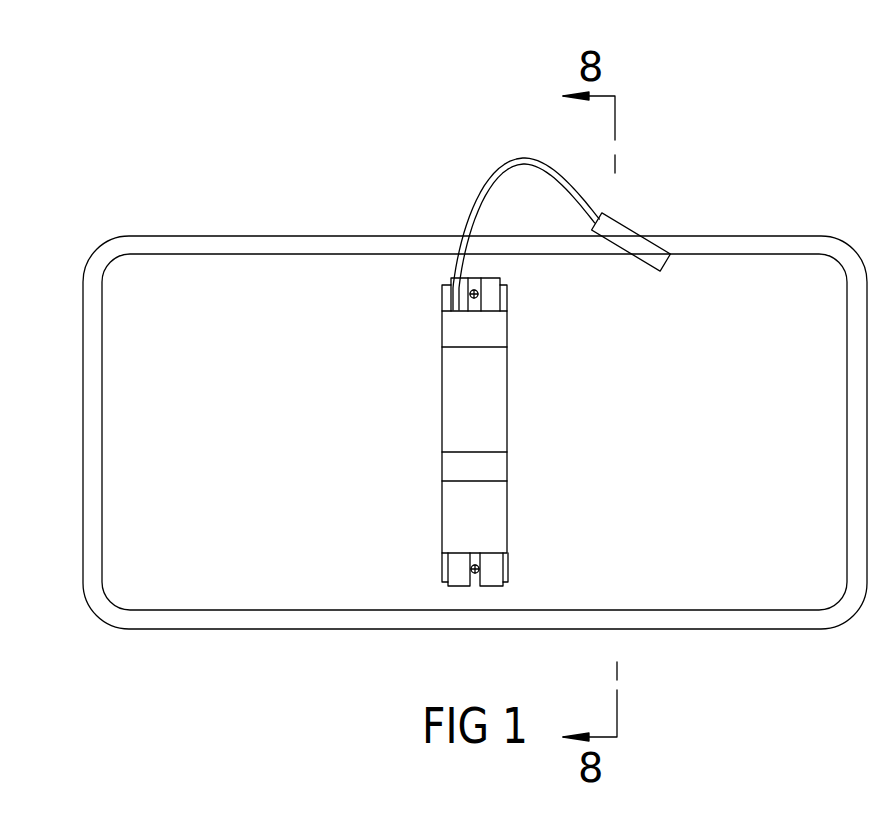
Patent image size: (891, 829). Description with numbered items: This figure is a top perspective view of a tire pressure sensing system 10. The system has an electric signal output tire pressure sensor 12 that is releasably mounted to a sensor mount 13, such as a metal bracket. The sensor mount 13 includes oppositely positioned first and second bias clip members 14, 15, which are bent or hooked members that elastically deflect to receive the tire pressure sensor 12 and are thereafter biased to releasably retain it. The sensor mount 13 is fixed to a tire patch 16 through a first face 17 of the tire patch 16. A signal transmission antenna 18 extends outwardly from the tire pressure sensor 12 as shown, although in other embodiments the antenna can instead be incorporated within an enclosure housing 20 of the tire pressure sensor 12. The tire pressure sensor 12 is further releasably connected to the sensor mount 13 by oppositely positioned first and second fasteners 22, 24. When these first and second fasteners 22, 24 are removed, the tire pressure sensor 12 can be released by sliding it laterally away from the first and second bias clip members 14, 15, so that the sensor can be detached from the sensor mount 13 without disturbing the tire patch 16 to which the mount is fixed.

The tire pressure sensing system 10 is at (655, 171).
The tire pressure sensor 12 is at (460, 328).
The sensor mount 13 is at (490, 582).
The first bias clip member 14 is at (462, 582).
The second bias clip member 15 is at (450, 280).
The tire patch 16 is at (617, 598).
The first face 17 is at (95, 618).
The signal transmission antenna 18 is at (537, 160).
The enclosure housing 20 is at (507, 325).
The first fastener 22 is at (475, 586).
The second fastener 24 is at (477, 280).